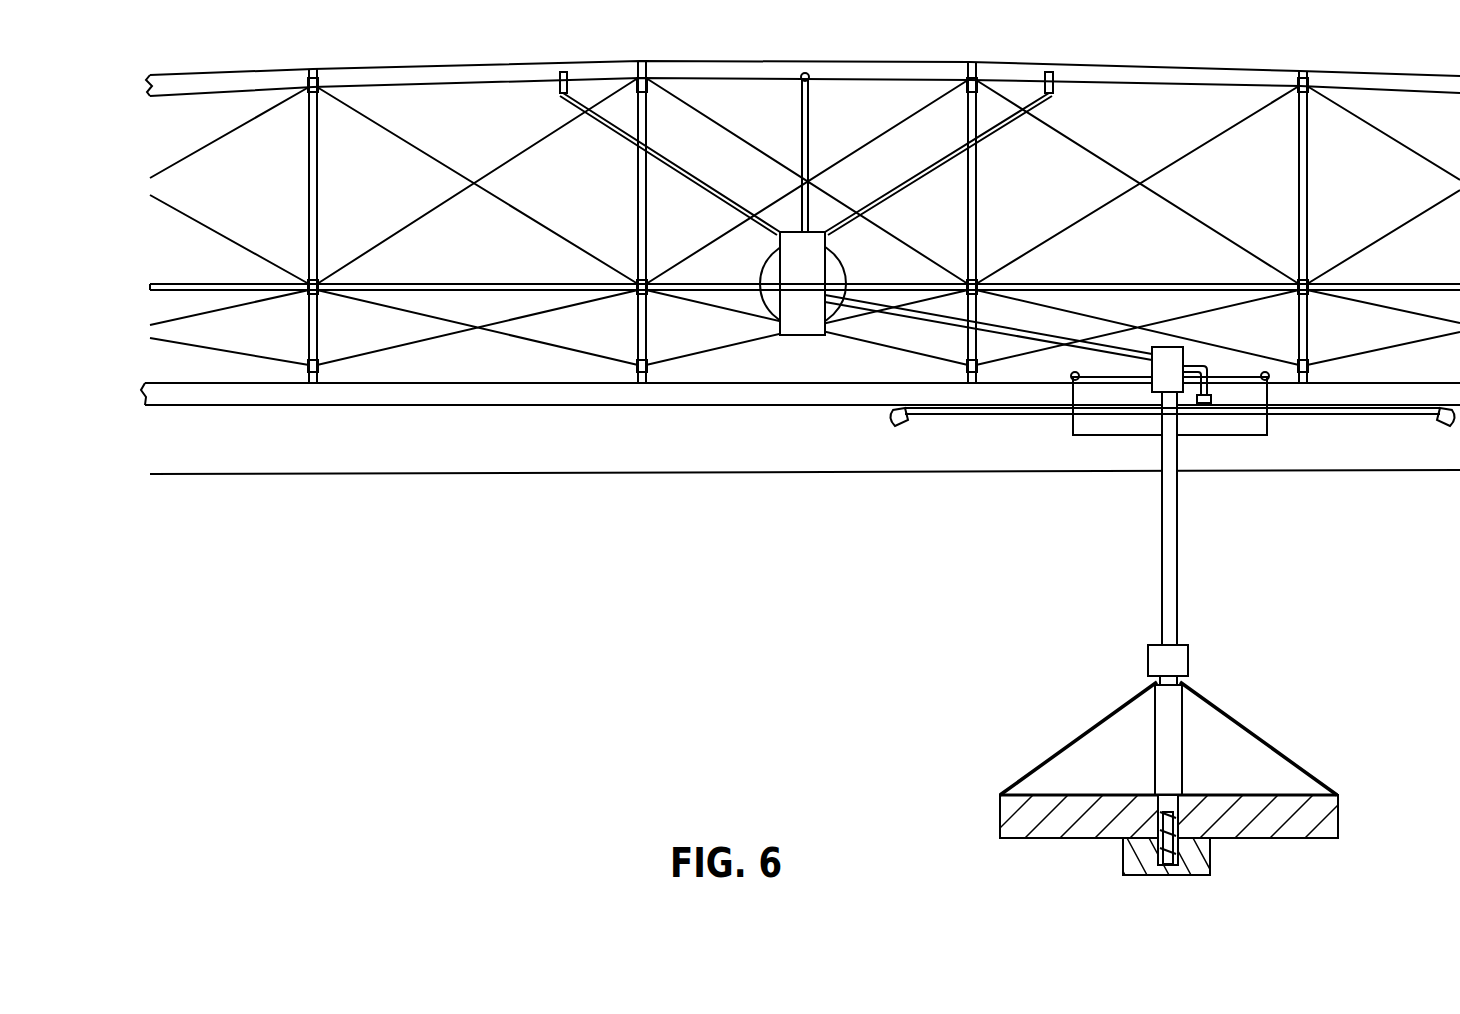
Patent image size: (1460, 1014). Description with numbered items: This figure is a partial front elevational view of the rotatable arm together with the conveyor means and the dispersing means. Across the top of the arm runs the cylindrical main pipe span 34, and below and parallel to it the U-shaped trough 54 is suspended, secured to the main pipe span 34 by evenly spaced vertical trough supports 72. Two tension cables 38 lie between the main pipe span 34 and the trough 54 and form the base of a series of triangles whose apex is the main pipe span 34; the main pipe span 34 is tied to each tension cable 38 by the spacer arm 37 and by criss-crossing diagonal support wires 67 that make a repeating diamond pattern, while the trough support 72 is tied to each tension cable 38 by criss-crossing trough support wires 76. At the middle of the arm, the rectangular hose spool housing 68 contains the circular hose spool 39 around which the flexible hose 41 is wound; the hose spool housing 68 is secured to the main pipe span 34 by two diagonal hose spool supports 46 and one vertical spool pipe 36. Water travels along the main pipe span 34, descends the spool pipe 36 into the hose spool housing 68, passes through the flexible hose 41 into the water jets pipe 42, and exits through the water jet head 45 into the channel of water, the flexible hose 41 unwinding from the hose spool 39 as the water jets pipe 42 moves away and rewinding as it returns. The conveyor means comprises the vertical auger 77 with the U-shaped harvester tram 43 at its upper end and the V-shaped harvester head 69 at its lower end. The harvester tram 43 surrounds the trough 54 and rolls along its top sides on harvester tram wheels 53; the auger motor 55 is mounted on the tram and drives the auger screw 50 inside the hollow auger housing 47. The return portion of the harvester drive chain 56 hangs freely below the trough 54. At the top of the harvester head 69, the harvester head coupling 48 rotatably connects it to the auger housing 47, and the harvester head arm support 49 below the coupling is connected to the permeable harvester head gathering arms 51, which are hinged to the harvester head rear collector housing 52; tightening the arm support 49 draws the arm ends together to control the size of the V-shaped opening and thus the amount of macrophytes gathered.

The main pipe span 34 is at (1018, 64).
The spool pipe 36 is at (809, 112).
The spacer arm 37 is at (637, 242).
The tension cable 38 is at (1030, 282).
The hose spool 39 is at (835, 267).
The flexible hose 41 is at (1205, 368).
The water jets pipe 42 is at (1010, 414).
The harvester tram 43 is at (1258, 430).
The water jet head 45 is at (893, 417).
The diagonal hose spool support 46 is at (700, 182).
The auger housing 47 is at (1162, 548).
The harvester head coupling 48 is at (1182, 660).
The harvester head arm support 49 is at (1110, 718).
The auger screw 50 is at (1172, 868).
The harvester head gathering arm 51 is at (1262, 830).
The harvester head rear collector housing 52 is at (1128, 858).
The harvester tram wheel 53 is at (1071, 375).
The trough 54 is at (406, 394).
The auger motor 55 is at (1163, 346).
The return portion of harvester drive chain 56 is at (318, 477).
The diagonal support wire 67 is at (547, 140).
The hose spool housing 68 is at (792, 259).
The harvester head 69 is at (1139, 774).
The trough support 72 is at (648, 342).
The trough support wire 76 is at (522, 338).
The auger 77 is at (1161, 518).